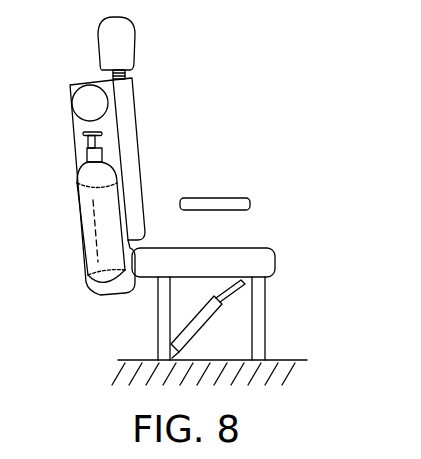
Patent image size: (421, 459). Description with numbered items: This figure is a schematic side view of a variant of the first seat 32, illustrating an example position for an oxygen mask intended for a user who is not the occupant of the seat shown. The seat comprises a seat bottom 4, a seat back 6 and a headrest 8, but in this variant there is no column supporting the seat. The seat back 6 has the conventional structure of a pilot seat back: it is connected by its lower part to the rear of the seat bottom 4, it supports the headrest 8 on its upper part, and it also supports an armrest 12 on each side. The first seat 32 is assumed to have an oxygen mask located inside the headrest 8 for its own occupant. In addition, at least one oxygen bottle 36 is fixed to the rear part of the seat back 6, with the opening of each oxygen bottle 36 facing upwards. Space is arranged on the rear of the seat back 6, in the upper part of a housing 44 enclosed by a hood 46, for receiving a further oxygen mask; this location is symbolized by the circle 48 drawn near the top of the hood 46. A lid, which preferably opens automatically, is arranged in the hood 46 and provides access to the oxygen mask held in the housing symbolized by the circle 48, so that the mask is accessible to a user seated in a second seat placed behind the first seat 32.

The seat bottom 4 is at (260, 263).
The seat back 6 is at (127, 118).
The headrest 8 is at (113, 43).
The armrest 12 is at (232, 205).
The first seat 32 is at (122, 313).
The oxygen bottle 36 is at (102, 262).
The housing 44 is at (80, 162).
The hood 46 is at (68, 135).
The circle 48 is at (85, 105).